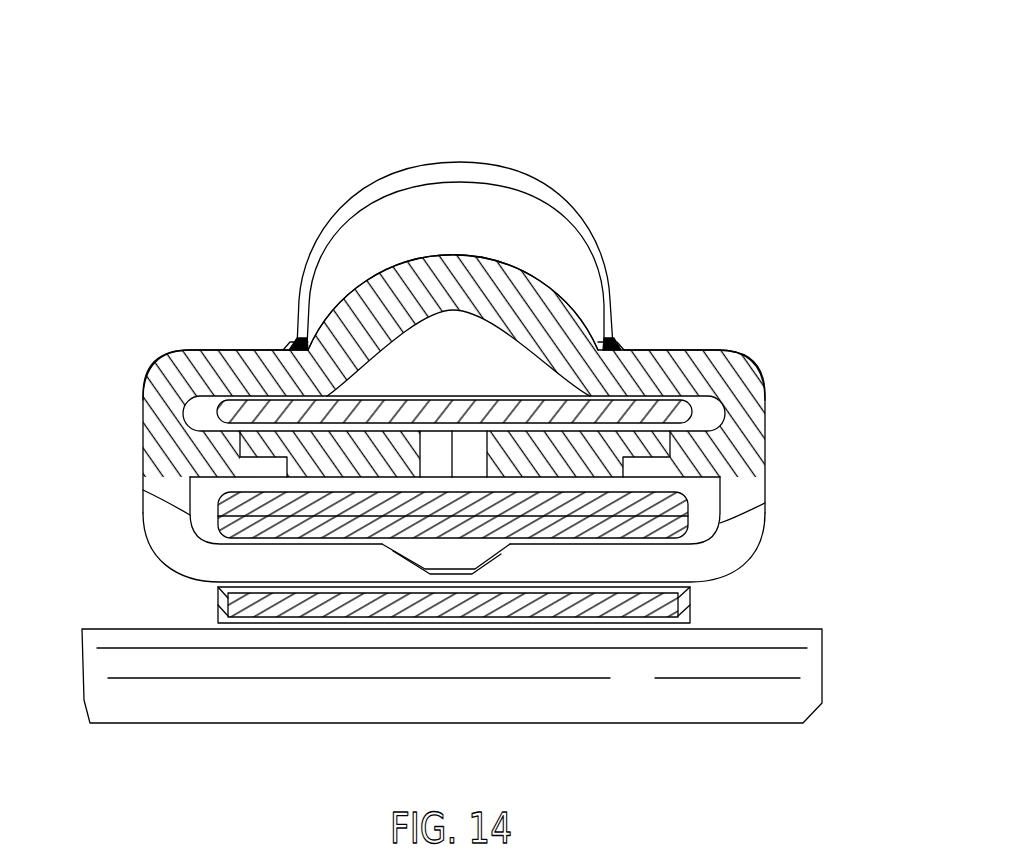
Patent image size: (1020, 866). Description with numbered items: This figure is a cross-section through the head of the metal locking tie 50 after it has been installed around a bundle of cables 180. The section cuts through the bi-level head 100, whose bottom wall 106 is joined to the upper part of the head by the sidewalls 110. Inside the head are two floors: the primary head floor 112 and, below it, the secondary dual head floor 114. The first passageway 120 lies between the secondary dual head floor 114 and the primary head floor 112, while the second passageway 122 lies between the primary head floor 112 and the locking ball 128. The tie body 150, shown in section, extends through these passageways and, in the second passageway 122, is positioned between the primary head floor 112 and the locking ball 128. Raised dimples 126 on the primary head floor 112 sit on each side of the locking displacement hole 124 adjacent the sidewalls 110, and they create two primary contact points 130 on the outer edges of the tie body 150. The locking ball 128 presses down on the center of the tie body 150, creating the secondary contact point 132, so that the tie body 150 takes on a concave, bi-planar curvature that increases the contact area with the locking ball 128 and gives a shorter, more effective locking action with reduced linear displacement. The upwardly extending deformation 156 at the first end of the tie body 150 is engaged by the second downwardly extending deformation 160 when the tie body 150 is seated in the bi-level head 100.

The metal locking tie 50 is at (528, 94).
The bi-level head 100 is at (556, 185).
The bottom wall 106 is at (693, 589).
The sidewalls 110 is at (763, 447).
The primary head floor 112 is at (282, 347).
The secondary dual head floor 114 is at (597, 567).
The first passageway 120 is at (763, 510).
The second passageway 122 is at (178, 353).
The locking displacement hole 124 is at (438, 452).
The raised dimples 126 is at (692, 420).
The locking ball 128 is at (497, 352).
The primary contact points 130 is at (185, 423).
The secondary contact point 132 is at (462, 413).
The tie body 150 is at (203, 517).
The upwardly extending deformation 156 is at (427, 557).
The second downwardly extending deformation 160 is at (422, 552).
The bundle of cables 180 is at (542, 697).